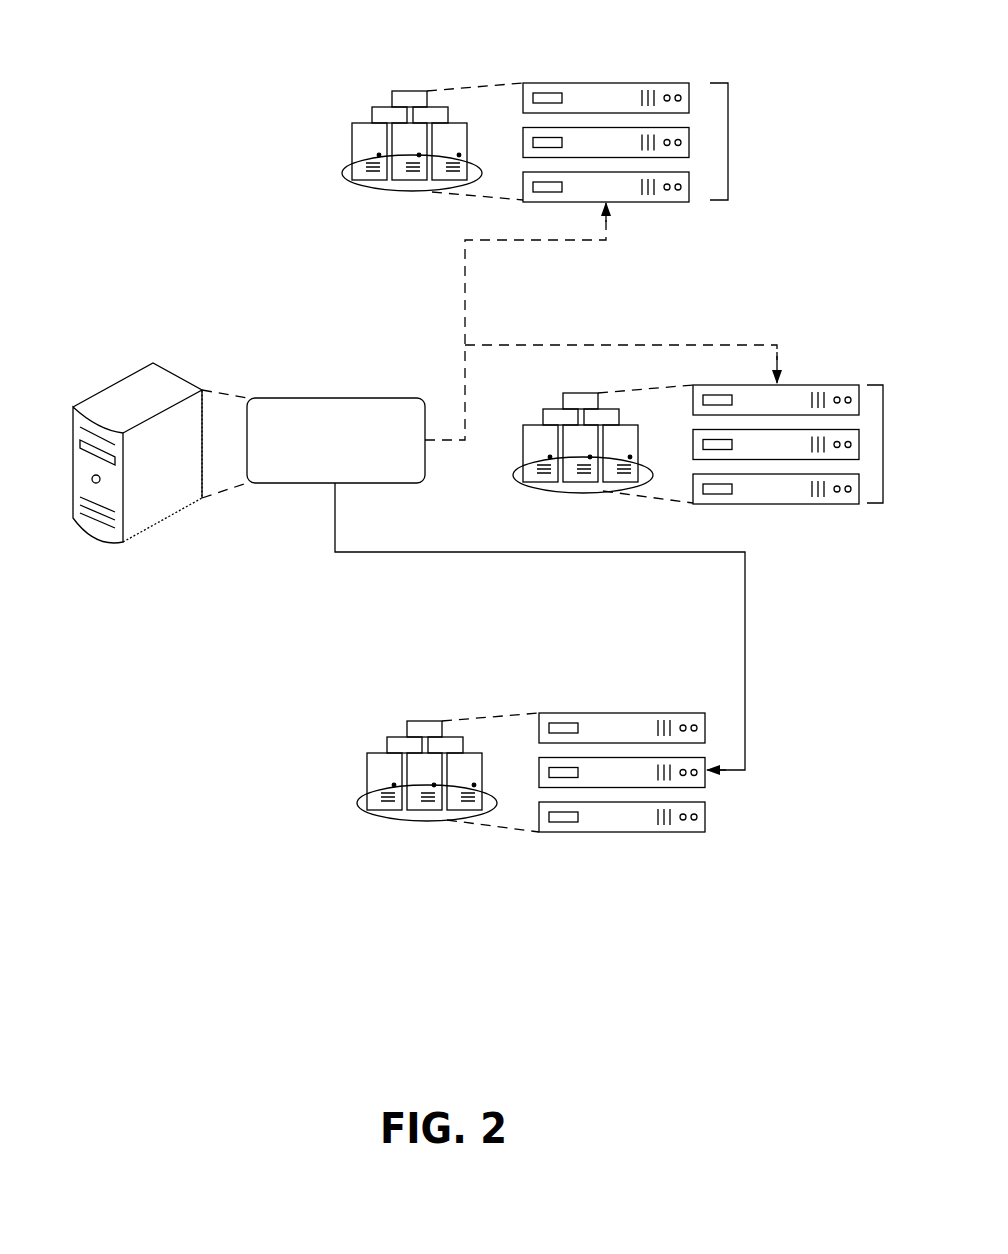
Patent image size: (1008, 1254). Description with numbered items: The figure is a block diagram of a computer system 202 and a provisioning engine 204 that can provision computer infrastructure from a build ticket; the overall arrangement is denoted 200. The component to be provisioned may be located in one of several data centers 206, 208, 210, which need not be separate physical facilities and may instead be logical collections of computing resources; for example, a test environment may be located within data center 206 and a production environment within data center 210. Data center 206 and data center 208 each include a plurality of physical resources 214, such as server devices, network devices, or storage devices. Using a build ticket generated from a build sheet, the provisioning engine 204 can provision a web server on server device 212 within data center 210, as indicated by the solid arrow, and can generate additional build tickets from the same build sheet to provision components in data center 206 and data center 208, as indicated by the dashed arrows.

The computing environment 200 is at (153, 54).
The computer system 202 is at (132, 375).
The provisioning engine 204 is at (336, 440).
The data center 206 is at (380, 94).
The data center 208 is at (589, 379).
The data center 210 is at (399, 723).
The server device 212 is at (706, 786).
The physical resources 214 is at (728, 142).